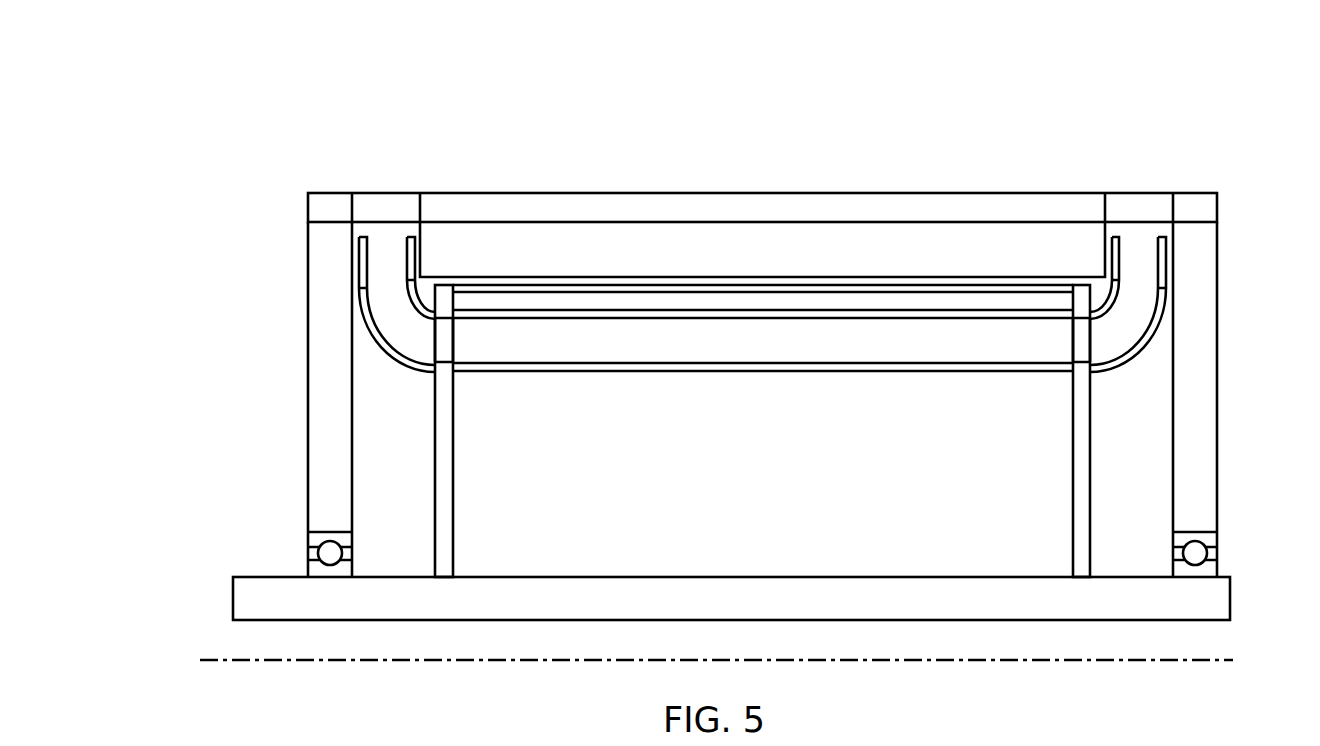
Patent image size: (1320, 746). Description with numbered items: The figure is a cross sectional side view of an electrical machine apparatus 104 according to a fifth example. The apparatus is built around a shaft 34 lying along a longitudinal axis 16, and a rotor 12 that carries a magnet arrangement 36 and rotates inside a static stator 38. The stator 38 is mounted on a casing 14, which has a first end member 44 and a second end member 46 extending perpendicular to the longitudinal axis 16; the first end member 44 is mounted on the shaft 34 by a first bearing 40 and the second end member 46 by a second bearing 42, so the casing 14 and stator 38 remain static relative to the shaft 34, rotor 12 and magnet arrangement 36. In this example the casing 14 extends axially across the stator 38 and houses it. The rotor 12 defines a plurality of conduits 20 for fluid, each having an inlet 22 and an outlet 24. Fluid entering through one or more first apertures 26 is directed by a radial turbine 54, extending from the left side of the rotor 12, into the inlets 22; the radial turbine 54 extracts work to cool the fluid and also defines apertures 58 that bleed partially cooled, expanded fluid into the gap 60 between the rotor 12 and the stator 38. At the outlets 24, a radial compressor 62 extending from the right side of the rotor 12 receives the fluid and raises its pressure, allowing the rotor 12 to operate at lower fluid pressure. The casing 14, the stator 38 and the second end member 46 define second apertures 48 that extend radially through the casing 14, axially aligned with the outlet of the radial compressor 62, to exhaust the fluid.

The electrical machine apparatus 104 is at (572, 88).
The casing 14 is at (693, 207).
The first end member 44 is at (325, 228).
The second end member 46 is at (1185, 210).
The first apertures 26 is at (382, 208).
The second apertures 48 is at (1137, 210).
The stator 38 is at (762, 249).
The gap 60 is at (525, 283).
The magnet arrangement 36 is at (633, 300).
The conduits 20 is at (753, 340).
The rotor 12 is at (445, 512).
The inlet 22 is at (445, 343).
The outlet 24 is at (1082, 342).
The radial turbine 54 is at (395, 367).
The apertures 58 is at (410, 287).
The radial compressor 62 is at (1145, 370).
The first bearing 40 is at (300, 552).
The second bearing 42 is at (1228, 552).
The shaft 34 is at (1210, 590).
The longitudinal axis 16 is at (935, 660).